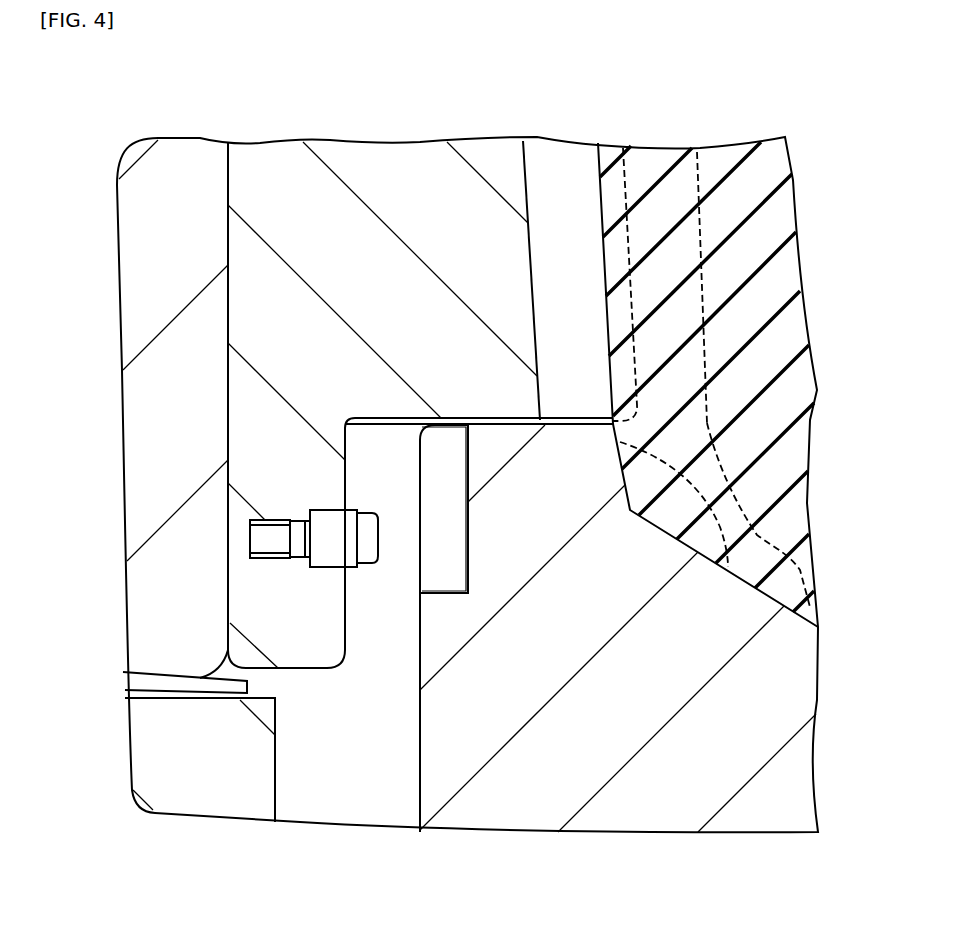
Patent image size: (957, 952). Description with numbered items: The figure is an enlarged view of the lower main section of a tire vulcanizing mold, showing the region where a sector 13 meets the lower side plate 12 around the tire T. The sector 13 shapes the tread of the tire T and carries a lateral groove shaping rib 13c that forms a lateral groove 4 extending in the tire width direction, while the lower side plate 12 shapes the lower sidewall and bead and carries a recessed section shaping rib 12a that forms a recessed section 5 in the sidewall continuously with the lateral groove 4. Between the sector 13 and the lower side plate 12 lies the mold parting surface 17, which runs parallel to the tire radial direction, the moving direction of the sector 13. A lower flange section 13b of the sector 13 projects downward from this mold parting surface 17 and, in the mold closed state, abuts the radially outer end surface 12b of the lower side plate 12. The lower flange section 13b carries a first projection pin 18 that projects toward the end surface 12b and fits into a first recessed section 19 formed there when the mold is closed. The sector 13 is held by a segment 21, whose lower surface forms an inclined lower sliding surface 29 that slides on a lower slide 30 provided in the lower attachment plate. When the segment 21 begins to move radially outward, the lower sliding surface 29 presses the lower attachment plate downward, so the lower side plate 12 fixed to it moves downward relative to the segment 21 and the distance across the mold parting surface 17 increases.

The lateral groove 4 is at (699, 180).
The recessed section 5 is at (768, 540).
The lower side plate 12 is at (527, 497).
The recessed section shaping rib 12a is at (727, 463).
The end surface 12b is at (416, 633).
The sector 13 is at (403, 313).
The lower flange section 13b is at (347, 615).
The lateral groove shaping rib 13c is at (625, 193).
The mold parting surface 17 is at (350, 420).
The first projection pin 18 is at (337, 556).
The first recessed section 19 is at (467, 495).
The segment 21 is at (230, 618).
The lower sliding surface 29 is at (150, 677).
The lower slide 30 is at (232, 680).
The tire T is at (762, 298).